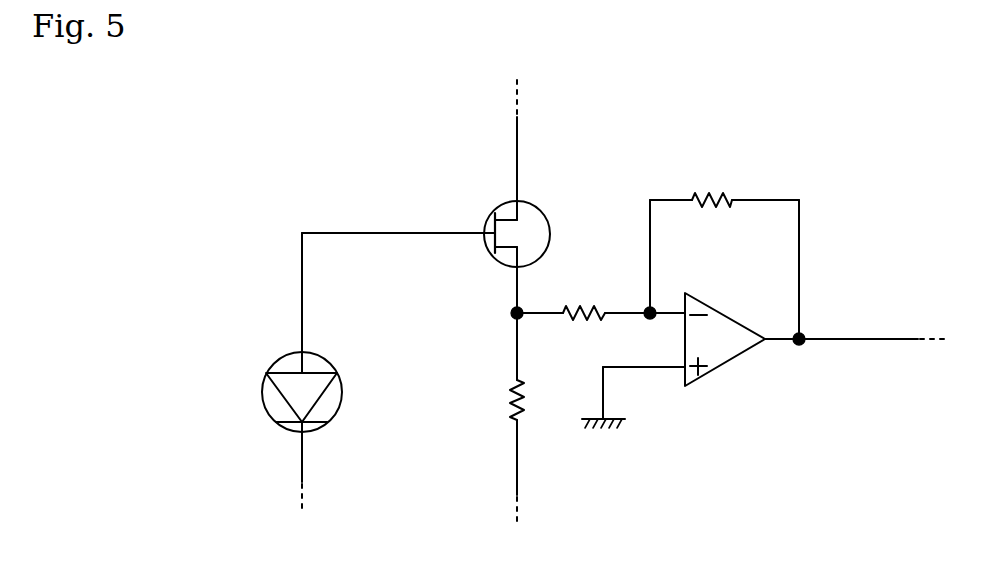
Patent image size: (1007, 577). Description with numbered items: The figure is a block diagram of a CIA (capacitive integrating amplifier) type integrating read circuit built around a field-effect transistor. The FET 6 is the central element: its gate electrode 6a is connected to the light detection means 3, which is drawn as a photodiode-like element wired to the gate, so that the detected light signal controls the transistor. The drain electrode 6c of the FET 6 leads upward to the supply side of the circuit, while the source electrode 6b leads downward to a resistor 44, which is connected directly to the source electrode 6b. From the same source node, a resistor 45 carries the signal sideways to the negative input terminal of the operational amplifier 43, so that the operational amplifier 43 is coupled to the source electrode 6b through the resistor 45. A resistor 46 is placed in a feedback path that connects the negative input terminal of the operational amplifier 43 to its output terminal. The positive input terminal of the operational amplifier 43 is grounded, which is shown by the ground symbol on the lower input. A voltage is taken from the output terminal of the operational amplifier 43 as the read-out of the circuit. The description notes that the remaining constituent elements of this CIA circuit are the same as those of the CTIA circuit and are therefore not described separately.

The light detection means 3 is at (265, 411).
The FET 6 is at (550, 234).
The gate electrode 6a is at (468, 218).
The source electrode 6b is at (496, 290).
The drain electrode 6c is at (533, 141).
The operational amplifier 43 is at (727, 364).
The resistor 44 is at (509, 400).
The resistor 45 is at (588, 297).
The resistor 46 is at (714, 191).